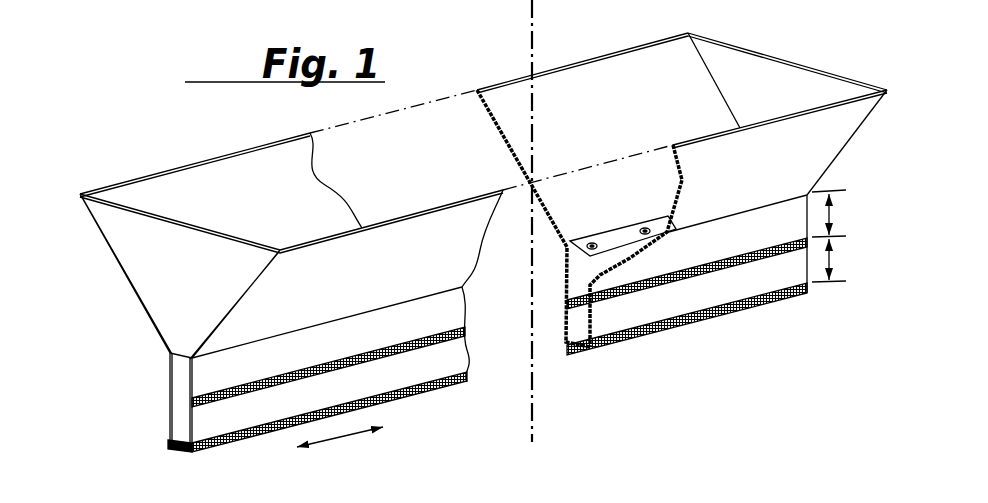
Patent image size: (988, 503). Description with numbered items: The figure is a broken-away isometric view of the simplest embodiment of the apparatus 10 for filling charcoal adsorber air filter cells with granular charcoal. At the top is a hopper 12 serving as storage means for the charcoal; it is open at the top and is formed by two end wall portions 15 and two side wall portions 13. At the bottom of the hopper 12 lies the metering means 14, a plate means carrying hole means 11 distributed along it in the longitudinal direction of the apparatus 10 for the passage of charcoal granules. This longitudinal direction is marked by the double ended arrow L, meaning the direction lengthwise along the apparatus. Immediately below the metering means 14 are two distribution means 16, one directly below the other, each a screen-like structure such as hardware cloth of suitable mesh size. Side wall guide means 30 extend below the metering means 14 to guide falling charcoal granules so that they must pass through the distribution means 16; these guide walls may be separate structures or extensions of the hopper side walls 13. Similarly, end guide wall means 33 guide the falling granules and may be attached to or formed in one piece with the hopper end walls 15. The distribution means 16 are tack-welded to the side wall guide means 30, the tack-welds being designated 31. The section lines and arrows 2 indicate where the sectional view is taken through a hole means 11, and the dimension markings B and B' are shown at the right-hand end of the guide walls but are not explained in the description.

The apparatus for filling charcoal adsorber filter cells 10 is at (158, 163).
The hopper 12 is at (742, 82).
The side wall portions 13 is at (246, 170).
The end wall portions 15 is at (160, 263).
The hole means 11 is at (589, 242).
The metering means 14 is at (624, 230).
The distribution means 16 is at (571, 306).
The side wall guide means 30 is at (210, 422).
The tack-welds 31 is at (262, 440).
The end guide wall means 33 is at (180, 377).
The section lines and arrows 2- 2 is at (510, 33).
The dimension B is at (842, 213).
The dimension B' is at (845, 259).
The longitudinal direction L is at (337, 440).